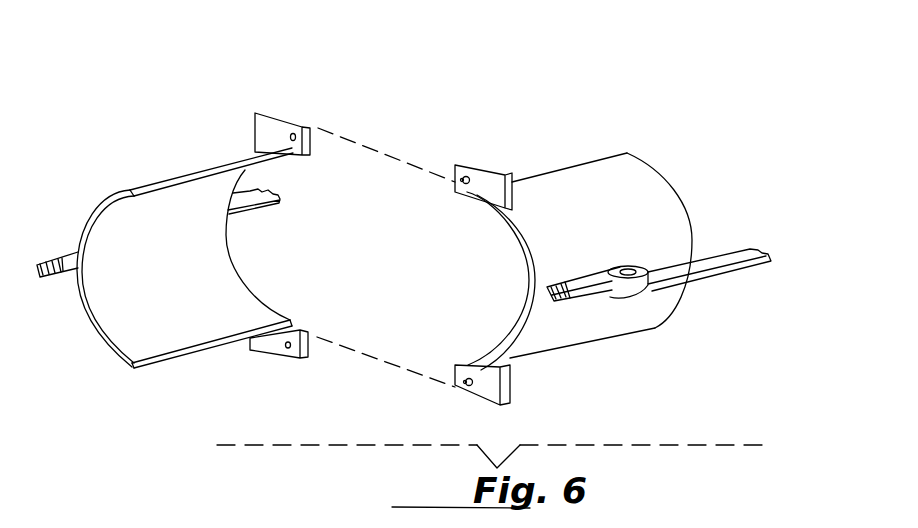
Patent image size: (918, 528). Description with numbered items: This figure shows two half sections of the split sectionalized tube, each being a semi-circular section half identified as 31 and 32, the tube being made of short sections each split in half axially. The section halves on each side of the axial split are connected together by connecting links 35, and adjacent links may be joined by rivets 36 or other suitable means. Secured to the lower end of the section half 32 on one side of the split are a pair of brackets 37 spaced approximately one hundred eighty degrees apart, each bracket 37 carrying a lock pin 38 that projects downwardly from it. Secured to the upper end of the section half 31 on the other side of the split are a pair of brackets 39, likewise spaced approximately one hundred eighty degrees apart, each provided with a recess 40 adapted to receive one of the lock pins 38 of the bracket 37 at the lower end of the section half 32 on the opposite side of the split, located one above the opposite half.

The semi-circular section half 31 is at (172, 178).
The semi-circular section half 32 is at (660, 217).
The connecting link 35 is at (64, 266).
The rivet 36 is at (628, 269).
The bracket 37 is at (487, 167).
The lock pin 38 is at (462, 175).
The bracket 39 is at (281, 131).
The recess 40 is at (296, 134).